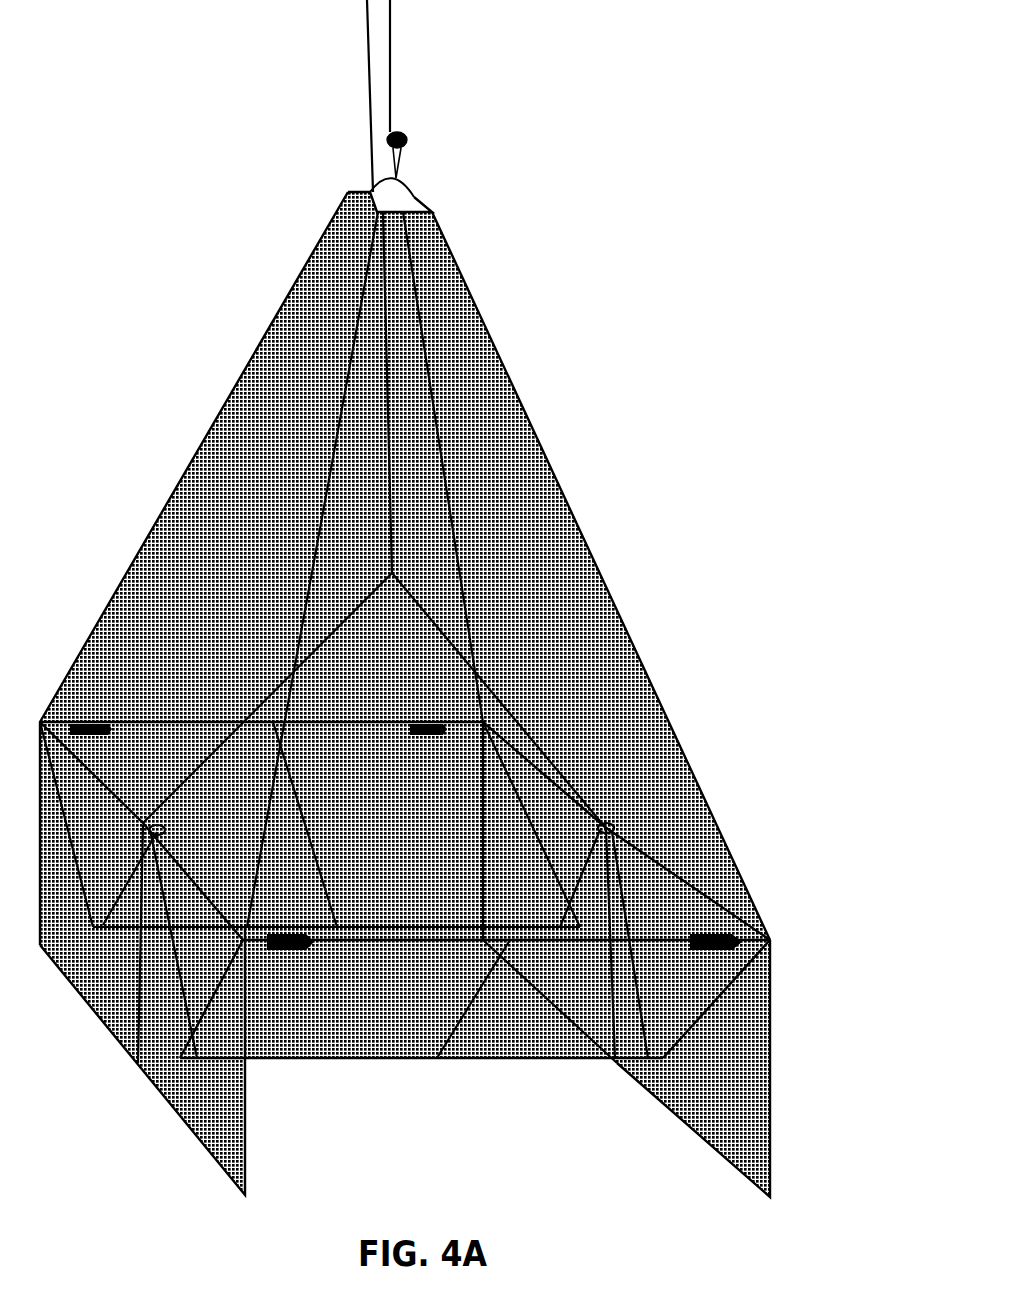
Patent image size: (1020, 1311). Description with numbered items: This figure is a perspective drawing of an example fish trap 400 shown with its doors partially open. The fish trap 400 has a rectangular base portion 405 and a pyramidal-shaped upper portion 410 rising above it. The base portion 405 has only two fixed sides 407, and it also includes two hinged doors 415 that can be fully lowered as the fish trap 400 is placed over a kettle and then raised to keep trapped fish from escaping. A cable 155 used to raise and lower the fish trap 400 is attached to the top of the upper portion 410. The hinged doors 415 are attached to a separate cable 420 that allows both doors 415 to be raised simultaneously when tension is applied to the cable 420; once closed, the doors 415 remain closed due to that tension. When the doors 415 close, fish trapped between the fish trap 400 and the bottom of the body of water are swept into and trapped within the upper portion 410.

The fish trap 400 is at (737, 47).
The cable 155 is at (392, 55).
The cable 420 is at (365, 55).
The upper portion 410 is at (589, 523).
The base portion 405 is at (805, 1047).
The fixed sides 407 is at (200, 1135).
The hinged doors 415 is at (398, 1060).